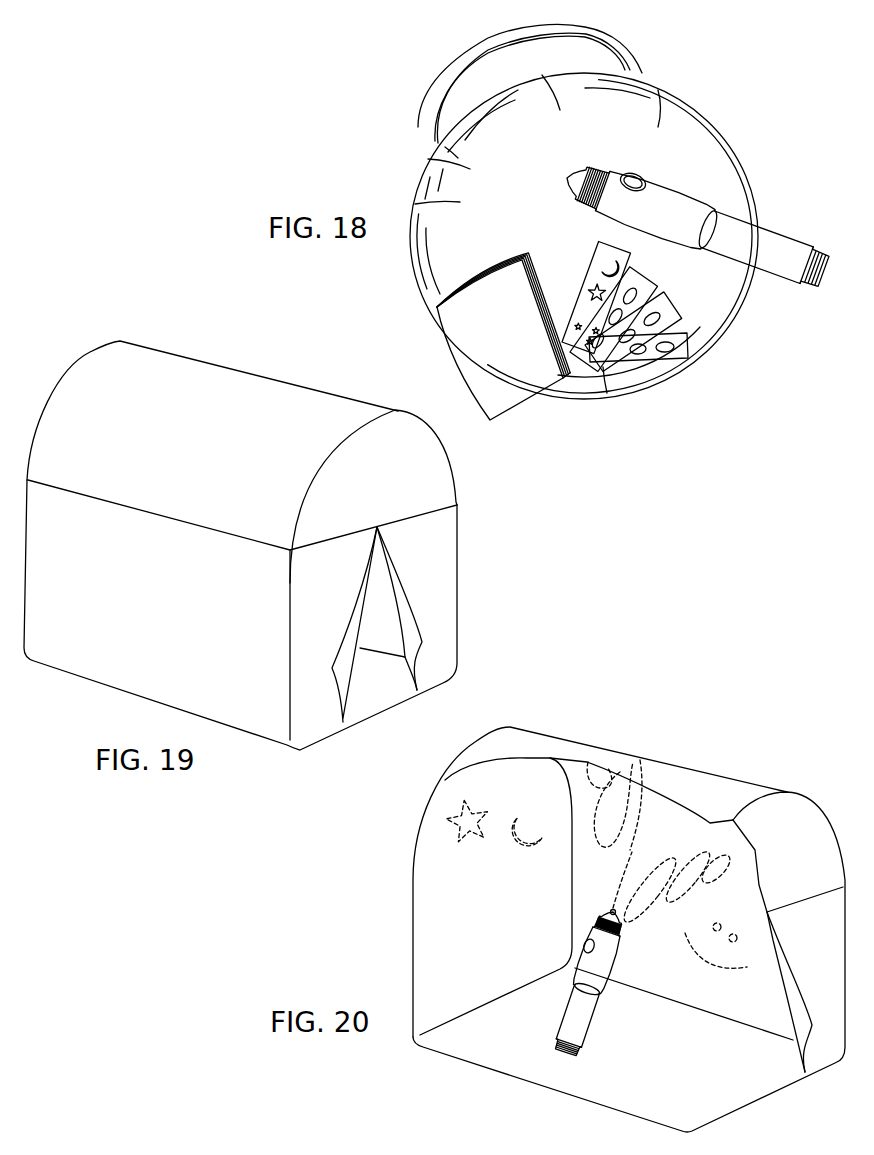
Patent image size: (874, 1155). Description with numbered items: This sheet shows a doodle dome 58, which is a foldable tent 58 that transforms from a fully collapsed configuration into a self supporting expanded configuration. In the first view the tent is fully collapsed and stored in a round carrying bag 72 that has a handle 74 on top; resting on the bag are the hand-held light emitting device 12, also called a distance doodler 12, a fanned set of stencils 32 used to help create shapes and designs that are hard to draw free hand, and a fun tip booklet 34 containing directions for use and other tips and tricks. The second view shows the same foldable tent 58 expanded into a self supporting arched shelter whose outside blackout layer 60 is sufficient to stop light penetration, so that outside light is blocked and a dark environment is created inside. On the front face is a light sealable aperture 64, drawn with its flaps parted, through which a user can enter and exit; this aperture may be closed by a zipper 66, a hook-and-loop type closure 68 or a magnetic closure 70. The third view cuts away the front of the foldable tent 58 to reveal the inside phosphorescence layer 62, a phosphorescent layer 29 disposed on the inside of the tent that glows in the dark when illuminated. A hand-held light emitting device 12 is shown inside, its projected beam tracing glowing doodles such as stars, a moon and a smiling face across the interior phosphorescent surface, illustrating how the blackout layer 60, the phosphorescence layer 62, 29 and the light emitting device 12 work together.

In FIG. 18, the hand-held light emitting device 12 is at (788, 248).
In FIG. 18, the stencils 32 is at (647, 360).
In FIG. 18, the fun tip booklet 34 is at (518, 390).
In FIG. 18, the doodle dome 58 is at (677, 93).
In FIG. 19, the doodle dome 58 is at (162, 367).
In FIG. 20, the doodle dome 58 is at (533, 743).
In FIG. 19, the outside blackout layer 60 is at (333, 407).
In FIG. 20, the outside blackout layer 60 is at (728, 788).
In FIG. 18, the carrying bag 72 is at (688, 158).
In FIG. 18, the handle 74 is at (455, 65).
In FIG. 20, the inside phosphorescence layer 62 is at (548, 899).
In FIG. 20, the phosphorescent layer 29 is at (418, 893).
In FIG. 19, the light sealable aperture 64 is at (469, 624).
In FIG. 19, the zipper 66 is at (469, 624).
In FIG. 19, the hook-and-loop type closure 68 is at (469, 624).
In FIG. 19, the magnetic closure 70 is at (410, 622).